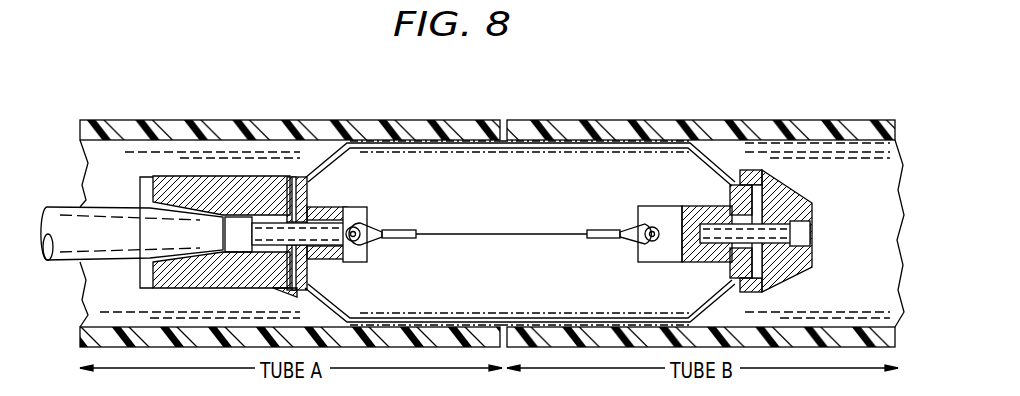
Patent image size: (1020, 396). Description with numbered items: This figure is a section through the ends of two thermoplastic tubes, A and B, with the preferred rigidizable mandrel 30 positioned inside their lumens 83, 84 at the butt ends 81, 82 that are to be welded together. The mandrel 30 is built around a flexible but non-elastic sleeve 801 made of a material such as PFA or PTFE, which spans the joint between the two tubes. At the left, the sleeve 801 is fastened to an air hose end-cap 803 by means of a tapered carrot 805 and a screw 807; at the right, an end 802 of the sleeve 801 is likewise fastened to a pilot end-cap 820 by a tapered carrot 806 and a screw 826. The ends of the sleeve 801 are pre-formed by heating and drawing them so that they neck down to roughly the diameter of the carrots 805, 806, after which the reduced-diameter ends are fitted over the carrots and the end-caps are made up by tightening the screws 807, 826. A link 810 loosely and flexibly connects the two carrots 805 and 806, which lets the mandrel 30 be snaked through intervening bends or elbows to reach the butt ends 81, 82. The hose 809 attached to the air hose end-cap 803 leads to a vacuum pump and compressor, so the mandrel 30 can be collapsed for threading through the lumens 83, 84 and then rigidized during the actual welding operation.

The rigidizable mandrel 30 is at (430, 209).
The butt end of tube A 81 is at (363, 120).
The butt end of tube B 82 is at (685, 120).
The lumen of tube A 83 is at (119, 166).
The lumen of tube B 84 is at (890, 172).
The sleeve 801 is at (330, 162).
The end of sleeve 802 is at (720, 165).
The air hose end-cap 803 is at (180, 176).
The tapered carrot 805 is at (350, 262).
The tapered carrot 806 is at (660, 206).
The screw 807 is at (273, 289).
The hose 809 is at (57, 207).
The link 810 is at (538, 233).
The pilot end-cap 820 is at (795, 200).
The screw 826 is at (783, 235).